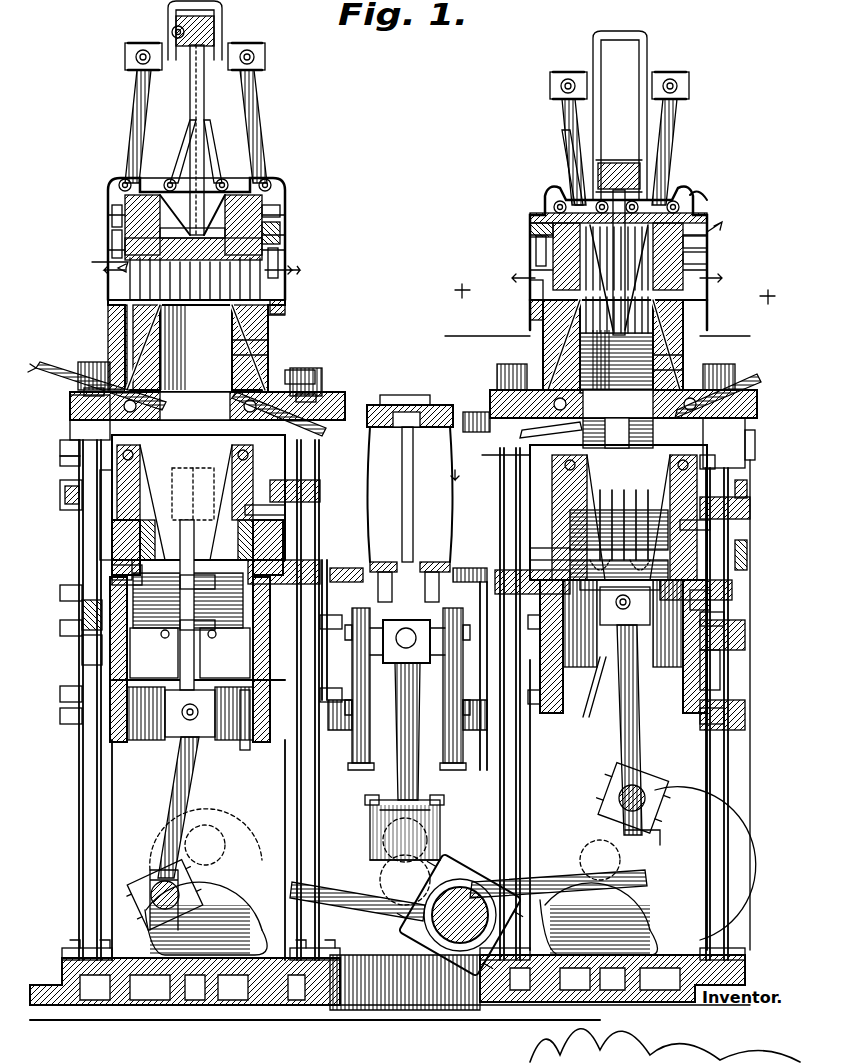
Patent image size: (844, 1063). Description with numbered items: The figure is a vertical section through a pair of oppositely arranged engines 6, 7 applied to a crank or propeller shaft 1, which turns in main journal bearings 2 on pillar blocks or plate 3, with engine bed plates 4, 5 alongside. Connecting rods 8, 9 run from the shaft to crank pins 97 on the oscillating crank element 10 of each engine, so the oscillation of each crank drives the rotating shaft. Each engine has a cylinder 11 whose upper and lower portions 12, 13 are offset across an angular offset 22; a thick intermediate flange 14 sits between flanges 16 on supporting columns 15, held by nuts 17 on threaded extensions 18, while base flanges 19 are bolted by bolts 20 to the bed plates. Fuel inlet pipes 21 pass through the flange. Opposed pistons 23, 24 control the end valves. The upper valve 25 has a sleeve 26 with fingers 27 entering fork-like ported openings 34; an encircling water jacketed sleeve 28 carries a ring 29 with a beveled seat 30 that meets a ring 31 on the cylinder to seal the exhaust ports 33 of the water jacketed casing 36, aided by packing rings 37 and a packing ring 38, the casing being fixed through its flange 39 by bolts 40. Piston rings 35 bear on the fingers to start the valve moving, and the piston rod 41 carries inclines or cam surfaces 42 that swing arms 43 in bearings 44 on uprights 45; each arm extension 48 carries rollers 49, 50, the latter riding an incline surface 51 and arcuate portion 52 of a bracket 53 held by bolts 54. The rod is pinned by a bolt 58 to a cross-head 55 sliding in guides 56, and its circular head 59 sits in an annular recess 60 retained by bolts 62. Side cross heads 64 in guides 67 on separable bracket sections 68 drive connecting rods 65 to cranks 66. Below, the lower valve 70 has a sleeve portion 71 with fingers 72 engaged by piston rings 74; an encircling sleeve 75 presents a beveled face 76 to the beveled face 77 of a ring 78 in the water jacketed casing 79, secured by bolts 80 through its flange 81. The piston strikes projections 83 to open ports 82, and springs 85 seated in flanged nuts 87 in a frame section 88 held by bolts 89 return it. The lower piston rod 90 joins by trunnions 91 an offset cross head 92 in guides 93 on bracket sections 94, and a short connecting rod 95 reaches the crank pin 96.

The crank or propeller shaft 1 is at (390, 835).
The main journal bearings 2 is at (385, 862).
The pillar blocks or plate 3 is at (345, 980).
The engine bed plate 4 is at (180, 1005).
The engine bed plate 5 is at (700, 955).
The engine 6 is at (286, 225).
The engine 7 is at (614, 257).
The connecting rod 8 is at (335, 890).
The connecting rod 9 is at (768, 880).
The oscillating crank element 10 is at (440, 682).
The cylinder 11 is at (270, 340).
The upper cylinder portion 12 is at (270, 352).
The lower cylinder portion 13 is at (753, 490).
The intermediate flange 14 is at (70, 425).
The supporting columns or uprights 15 is at (322, 520).
The column flanges 16 is at (755, 450).
The nuts 17 is at (80, 365).
The threaded extensions 18 is at (96, 362).
The base flanges 19 is at (62, 955).
The bolts 20 is at (300, 1008).
The fuel inlet pipes 21 is at (60, 385).
The angular offset 22 is at (200, 405).
The upper piston 23 is at (262, 215).
The lower piston 24 is at (530, 500).
The upper valve 25 is at (112, 200).
The valve sleeve 26 is at (700, 205).
The fingers 27 is at (708, 243).
The water jacketed sleeve 28 is at (530, 228).
The ring 29 is at (708, 260).
The beveled seat 30 is at (270, 262).
The ring 31 is at (528, 300).
The exhaust ports 33 is at (100, 272).
The ported openings 34 is at (718, 310).
The piston rings 35 is at (114, 240).
The water jacketed casing 36 is at (285, 240).
The packing rings 37 is at (283, 222).
The packing ring 38 is at (290, 305).
The casing flange 39 is at (300, 372).
The bolts 40 is at (288, 316).
The piston rod 41 is at (205, 108).
The inclines or cam surfaces 42 is at (200, 128).
The swinging arms 43 is at (135, 86).
The bearings 44 is at (125, 57).
The uprights 45 is at (183, 150).
The arm extension 48 is at (228, 185).
The roller 49 is at (148, 160).
The roller 50 is at (164, 182).
The incline surface 51 is at (112, 192).
The arcuate portion 52 is at (120, 178).
The bracket 53 is at (118, 215).
The bolts 54 is at (285, 213).
The cross-head 55 is at (216, 40).
The guides 56 is at (172, 100).
The bolt 58 is at (172, 31).
The circular head or flange 59 is at (94, 260).
The annular recess 60 is at (621, 524).
The bolts 62 is at (530, 554).
The cross heads 64 is at (722, 640).
The connecting rods 65 is at (185, 690).
The cranks 66 is at (225, 750).
The guides 67 is at (322, 565).
The separable bracket sections 68 is at (320, 485).
The lower valve 70 is at (82, 612).
The valve sleeve portion 71 is at (712, 595).
The fingers 72 is at (622, 536).
The piston rings 74 is at (550, 559).
The encircling sleeve 75 is at (112, 560).
The beveled face 76 is at (112, 535).
The beveled face 77 is at (100, 520).
The ring 78 is at (60, 490).
The water jacketed casing 79 is at (80, 470).
The bolts 80 is at (63, 449).
The casing flange 81 is at (60, 447).
The ports 82 is at (286, 510).
The projections 83 is at (204, 582).
The springs 85 is at (204, 625).
The flanged nuts 87 is at (235, 659).
The frame section 88 is at (144, 659).
The bolts 89 is at (82, 645).
The piston rod 90 is at (112, 683).
The trunnions 91 is at (180, 720).
The cross head 92 is at (112, 705).
The guides 93 is at (112, 790).
The separable bracket sections 94 is at (60, 593).
The connecting rod 95 is at (160, 830).
The crank pin 96 is at (150, 890).
The crank pins 97 is at (370, 810).